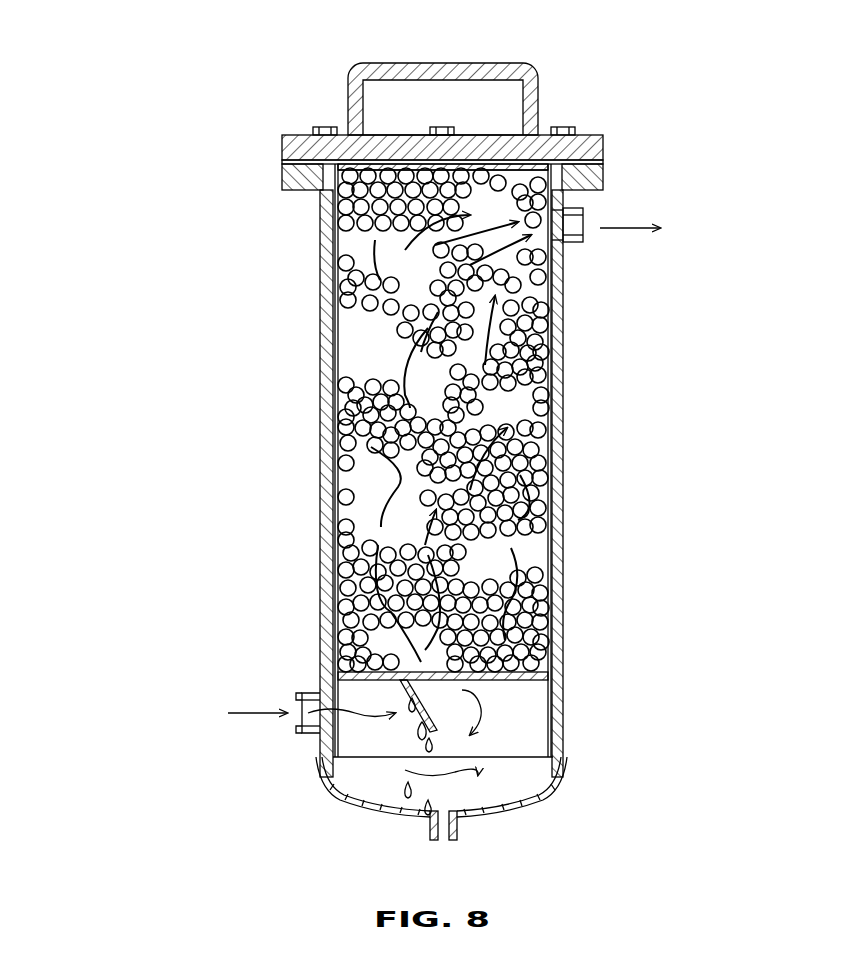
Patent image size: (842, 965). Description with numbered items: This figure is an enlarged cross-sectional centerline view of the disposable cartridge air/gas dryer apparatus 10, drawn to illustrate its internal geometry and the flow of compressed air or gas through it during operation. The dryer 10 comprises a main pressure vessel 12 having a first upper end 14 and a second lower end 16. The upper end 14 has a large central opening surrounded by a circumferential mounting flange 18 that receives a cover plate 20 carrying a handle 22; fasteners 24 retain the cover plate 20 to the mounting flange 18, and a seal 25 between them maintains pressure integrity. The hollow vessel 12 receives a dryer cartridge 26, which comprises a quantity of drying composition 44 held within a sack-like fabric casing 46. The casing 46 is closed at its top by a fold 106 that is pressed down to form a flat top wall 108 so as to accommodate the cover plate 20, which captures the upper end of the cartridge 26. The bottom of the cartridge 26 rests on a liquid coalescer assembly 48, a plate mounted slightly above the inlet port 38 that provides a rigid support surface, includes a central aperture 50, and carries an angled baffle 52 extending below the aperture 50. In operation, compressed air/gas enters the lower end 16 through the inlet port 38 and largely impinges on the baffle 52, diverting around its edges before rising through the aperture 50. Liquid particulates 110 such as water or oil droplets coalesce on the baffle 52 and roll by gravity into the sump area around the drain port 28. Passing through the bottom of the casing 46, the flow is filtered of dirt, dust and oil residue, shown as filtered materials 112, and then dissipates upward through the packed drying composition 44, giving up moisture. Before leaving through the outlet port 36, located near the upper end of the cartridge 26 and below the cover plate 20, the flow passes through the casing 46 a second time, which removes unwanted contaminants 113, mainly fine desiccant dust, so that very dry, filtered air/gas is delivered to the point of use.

The disposable cartridge air/gas dryer apparatus 10 is at (110, 233).
The main pressure vessel 12 is at (287, 480).
The first (upper) end 14 is at (258, 165).
The second (lower) end 16 is at (598, 776).
The circumferential mounting flange 18 is at (286, 190).
The cover plate 20 is at (282, 150).
The handle 22 is at (480, 63).
The fasteners 24 is at (325, 127).
The seal 25 is at (603, 160).
The dryer cartridge 26 is at (326, 352).
The drain port 28 is at (460, 835).
The outlet port 36 is at (583, 242).
The inlet port 38 is at (312, 693).
The drying composition 44 is at (563, 360).
The fabric casing 46 is at (556, 400).
The liquid coalescer assembly 48 is at (548, 680).
The central aperture 50 is at (462, 700).
The angled baffle 52 is at (403, 700).
The fold 106 is at (425, 167).
The top wall 108 is at (468, 165).
The liquid particulates 110 is at (398, 800).
The filtered materials 112 is at (460, 712).
The unwanted contaminants 113 is at (563, 212).